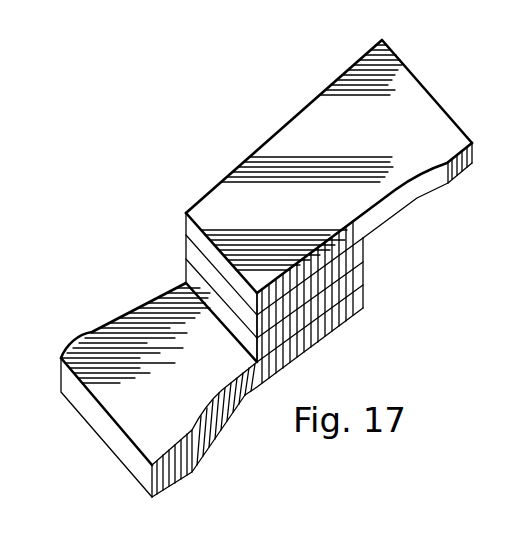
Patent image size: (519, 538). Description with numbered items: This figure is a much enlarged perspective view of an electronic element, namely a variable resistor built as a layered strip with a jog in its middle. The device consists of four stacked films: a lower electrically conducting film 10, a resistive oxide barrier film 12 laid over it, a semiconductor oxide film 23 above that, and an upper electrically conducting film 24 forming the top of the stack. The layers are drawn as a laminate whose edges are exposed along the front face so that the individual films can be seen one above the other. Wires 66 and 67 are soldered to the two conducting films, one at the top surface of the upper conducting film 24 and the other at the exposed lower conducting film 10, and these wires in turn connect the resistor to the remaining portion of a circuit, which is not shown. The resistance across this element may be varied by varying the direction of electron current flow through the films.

The electrically conducting film 10 is at (357, 298).
The resistive oxide barrier film 12 is at (356, 274).
The semiconductor oxide film 23 is at (356, 250).
The electrically conducting film 24 is at (400, 199).
The wire 66 is at (405, 106).
The wire 67 is at (123, 403).